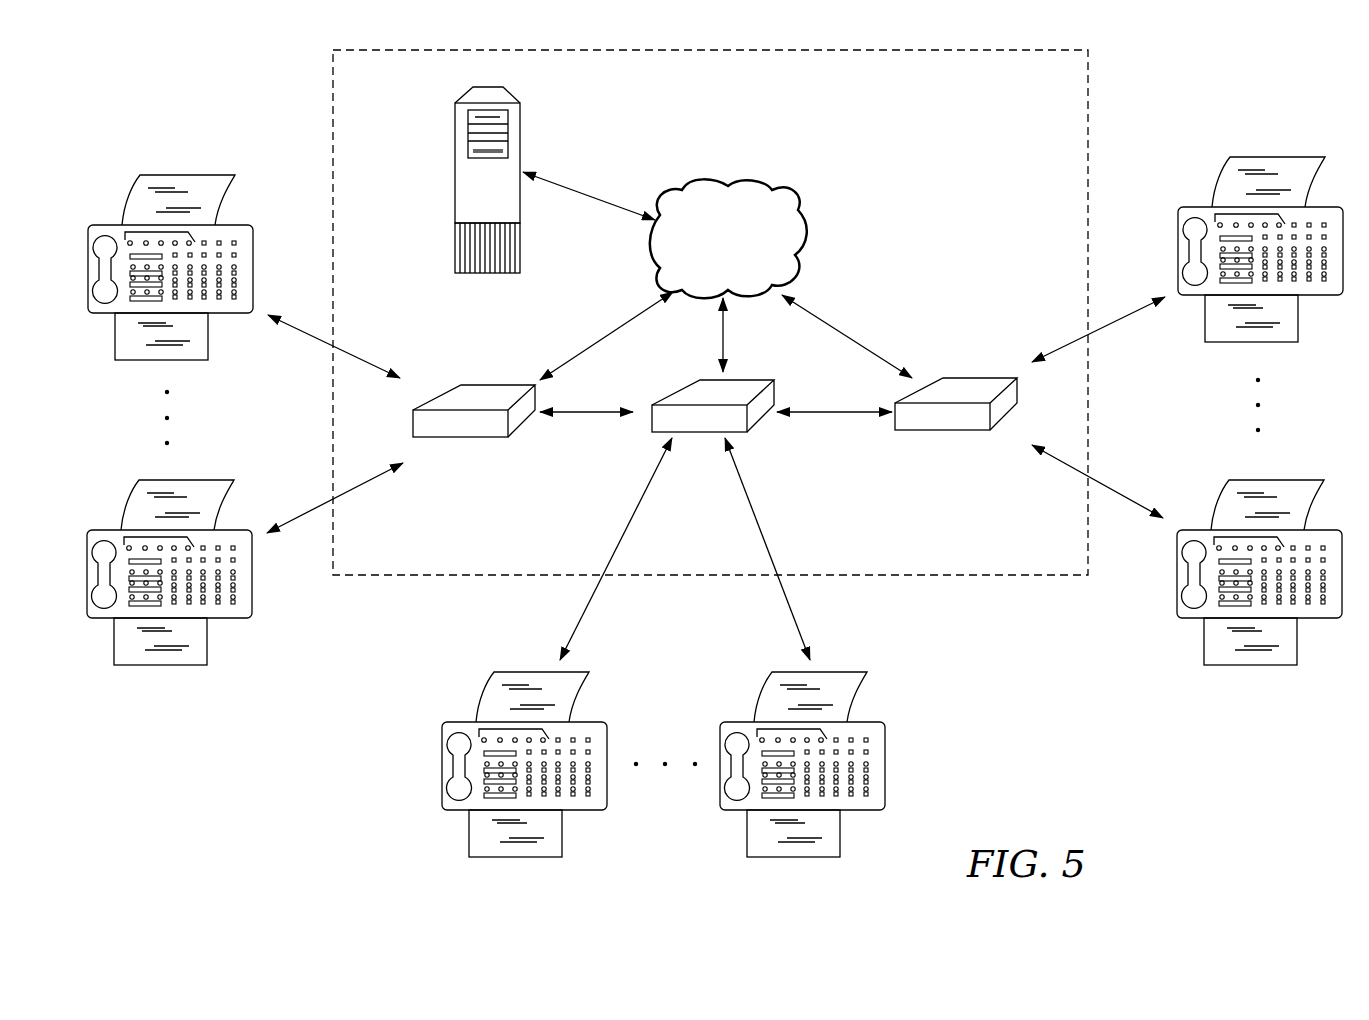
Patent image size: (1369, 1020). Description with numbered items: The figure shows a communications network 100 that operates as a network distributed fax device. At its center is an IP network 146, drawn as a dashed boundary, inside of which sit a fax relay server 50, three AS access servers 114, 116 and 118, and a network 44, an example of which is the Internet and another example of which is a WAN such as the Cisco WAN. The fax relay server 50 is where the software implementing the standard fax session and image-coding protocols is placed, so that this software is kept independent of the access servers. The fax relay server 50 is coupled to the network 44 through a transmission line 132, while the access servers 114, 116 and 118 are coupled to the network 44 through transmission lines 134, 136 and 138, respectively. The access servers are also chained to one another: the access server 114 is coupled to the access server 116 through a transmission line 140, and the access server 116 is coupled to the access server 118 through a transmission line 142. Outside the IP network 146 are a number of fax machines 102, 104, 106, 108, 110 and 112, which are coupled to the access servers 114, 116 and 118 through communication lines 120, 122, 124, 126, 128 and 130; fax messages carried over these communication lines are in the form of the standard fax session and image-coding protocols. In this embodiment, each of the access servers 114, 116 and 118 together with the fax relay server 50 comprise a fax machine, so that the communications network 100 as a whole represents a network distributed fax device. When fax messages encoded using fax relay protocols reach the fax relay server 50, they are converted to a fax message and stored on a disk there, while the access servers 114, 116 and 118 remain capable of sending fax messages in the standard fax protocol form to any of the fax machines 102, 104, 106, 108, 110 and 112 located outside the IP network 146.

The communications network 100 is at (238, 57).
The IP network 146 is at (333, 100).
The fax relay server 50 is at (455, 207).
The network 44 is at (800, 193).
The access server 114 is at (466, 437).
The access server 116 is at (757, 431).
The access server 118 is at (944, 429).
The fax machine 102 is at (91, 316).
The fax machine 104 is at (94, 529).
The fax machine 106 is at (442, 788).
The fax machine 108 is at (886, 787).
The fax machine 110 is at (1178, 618).
The fax machine 112 is at (1178, 208).
The communication line 120 is at (307, 335).
The communication line 122 is at (317, 505).
The communication line 124 is at (584, 605).
The communication line 126 is at (794, 603).
The communication line 128 is at (1118, 490).
The communication line 130 is at (1117, 325).
The transmission line 132 is at (586, 192).
The transmission line 134 is at (607, 330).
The transmission line 136 is at (723, 338).
The transmission line 138 is at (855, 333).
The transmission line 140 is at (590, 418).
The transmission line 142 is at (833, 415).